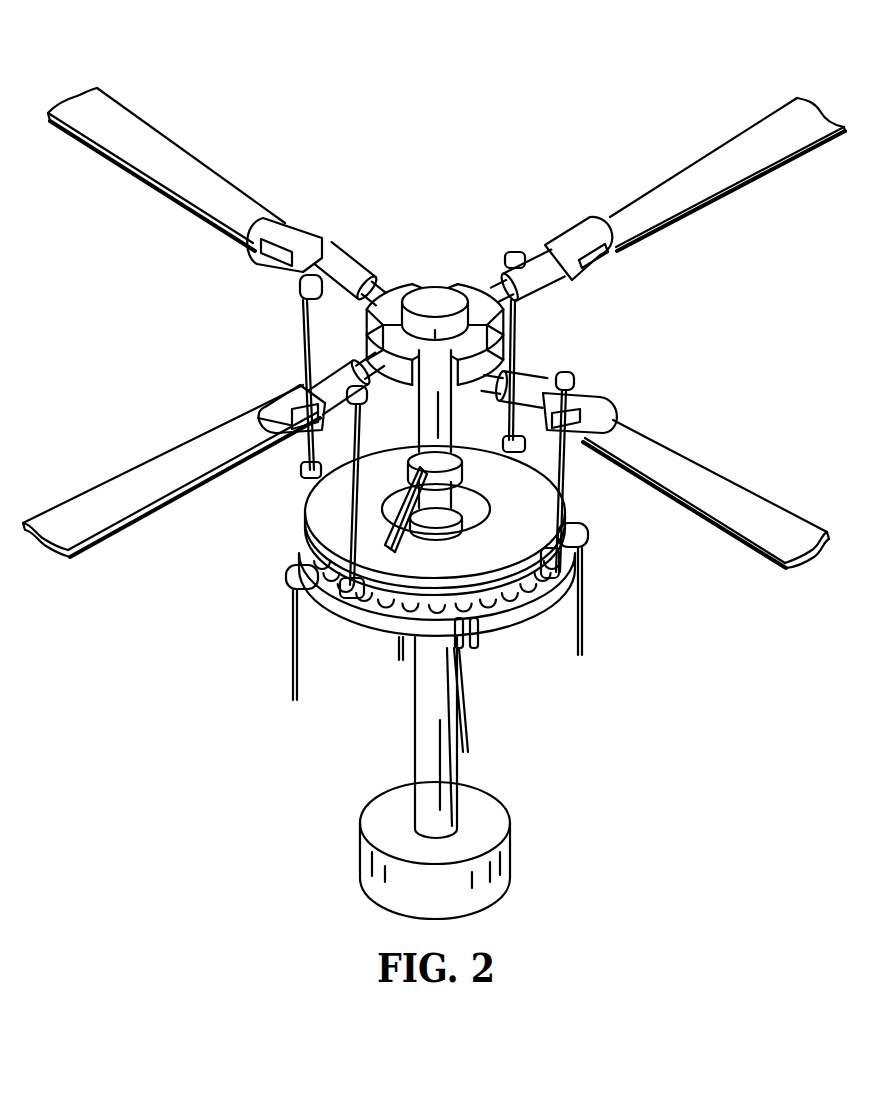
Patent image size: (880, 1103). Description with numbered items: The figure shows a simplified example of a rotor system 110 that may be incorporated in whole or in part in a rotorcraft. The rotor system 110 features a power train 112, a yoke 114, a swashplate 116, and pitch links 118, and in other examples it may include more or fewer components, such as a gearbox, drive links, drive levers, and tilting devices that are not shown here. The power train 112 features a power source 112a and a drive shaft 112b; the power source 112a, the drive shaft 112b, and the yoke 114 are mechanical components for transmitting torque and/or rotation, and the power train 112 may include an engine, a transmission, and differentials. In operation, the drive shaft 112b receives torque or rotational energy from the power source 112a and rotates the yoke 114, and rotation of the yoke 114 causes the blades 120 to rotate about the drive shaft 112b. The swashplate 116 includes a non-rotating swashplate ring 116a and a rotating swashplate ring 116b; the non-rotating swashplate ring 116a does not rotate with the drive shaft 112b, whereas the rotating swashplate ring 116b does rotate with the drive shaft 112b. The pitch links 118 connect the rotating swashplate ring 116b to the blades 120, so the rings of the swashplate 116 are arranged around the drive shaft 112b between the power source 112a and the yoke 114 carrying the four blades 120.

The rotor system 110 is at (489, 86).
The power train 112 is at (420, 778).
The power source 112a is at (511, 855).
The drive shaft 112b is at (414, 745).
The yoke 114 is at (395, 295).
The swashplate 116 is at (421, 551).
The non-rotating swashplate ring 116a is at (505, 627).
The rotating swashplate ring 116b is at (320, 510).
The pitch links 118 is at (300, 338).
The blades 120 is at (186, 162).